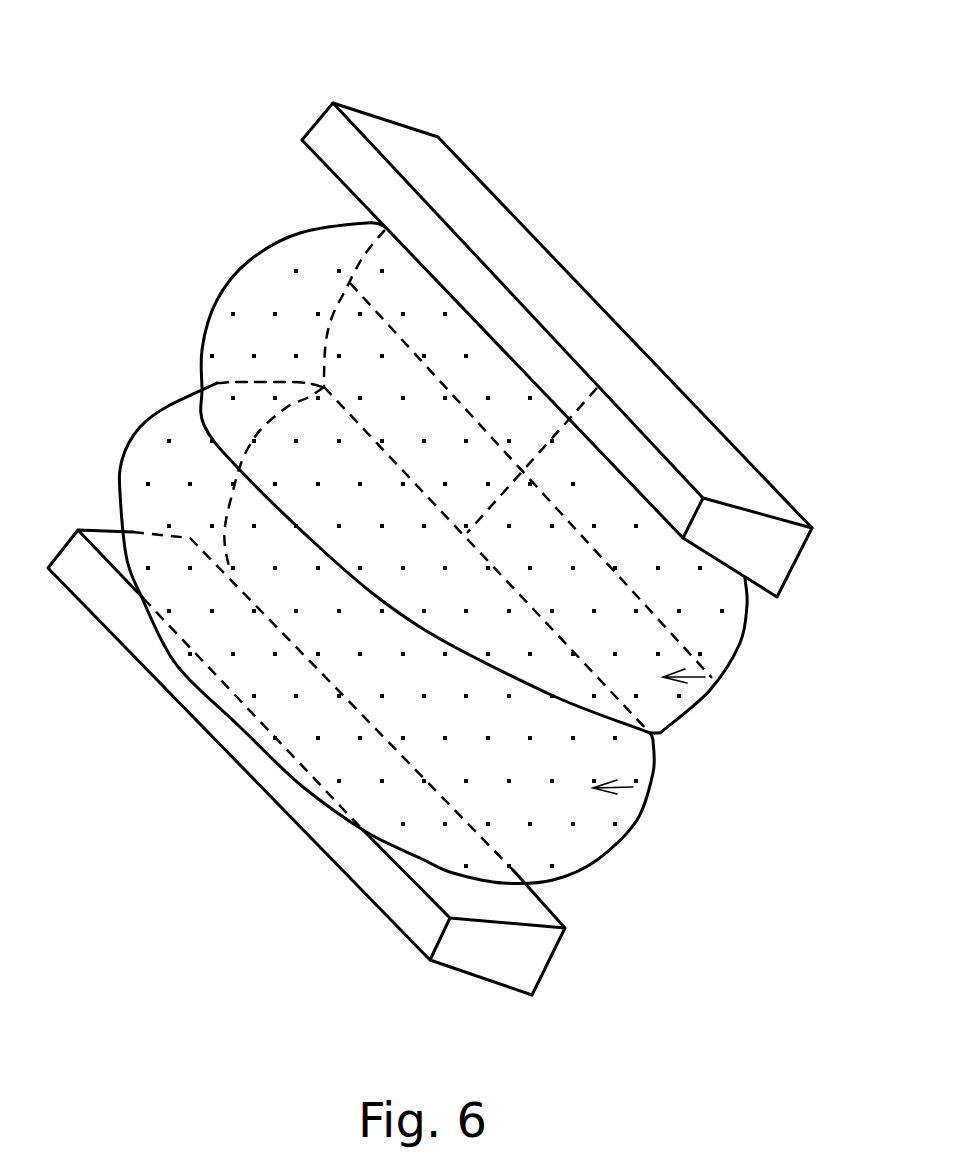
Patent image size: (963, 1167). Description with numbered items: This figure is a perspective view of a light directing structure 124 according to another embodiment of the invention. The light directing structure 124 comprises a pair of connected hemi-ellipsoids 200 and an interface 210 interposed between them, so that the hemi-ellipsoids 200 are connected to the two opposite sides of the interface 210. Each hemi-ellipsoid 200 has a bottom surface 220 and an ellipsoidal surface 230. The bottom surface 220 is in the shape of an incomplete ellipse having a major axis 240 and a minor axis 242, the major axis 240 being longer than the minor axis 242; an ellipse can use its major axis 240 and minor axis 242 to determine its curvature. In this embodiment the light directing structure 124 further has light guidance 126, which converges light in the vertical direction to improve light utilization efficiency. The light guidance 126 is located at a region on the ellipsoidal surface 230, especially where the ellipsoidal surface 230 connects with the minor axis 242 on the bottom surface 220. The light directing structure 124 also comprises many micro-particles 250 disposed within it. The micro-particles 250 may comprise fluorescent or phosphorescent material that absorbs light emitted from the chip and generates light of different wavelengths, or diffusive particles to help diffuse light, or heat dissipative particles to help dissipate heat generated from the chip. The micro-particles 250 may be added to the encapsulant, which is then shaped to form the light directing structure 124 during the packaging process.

The light directing structure 124 is at (114, 37).
The light guidance 126 is at (406, 133).
The hemi-ellipsoid 200 is at (713, 677).
The interface 210 is at (583, 683).
The bottom surface 220 is at (607, 860).
The ellipsoidal surface 230 is at (228, 285).
The major axis 240 is at (398, 336).
The minor axis 242 is at (553, 440).
The micro-particles 250 is at (147, 483).